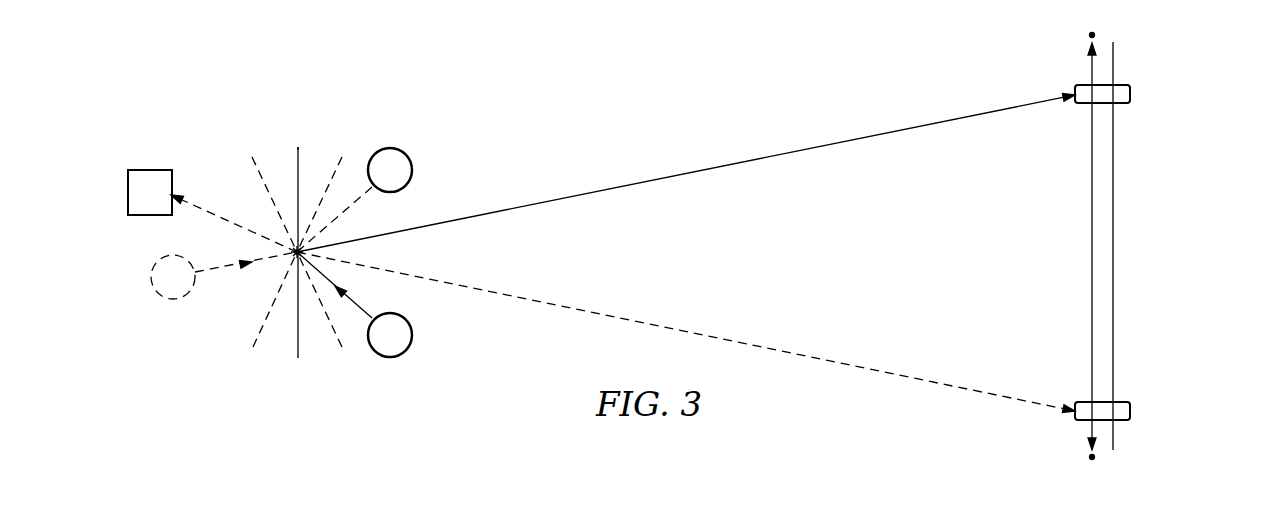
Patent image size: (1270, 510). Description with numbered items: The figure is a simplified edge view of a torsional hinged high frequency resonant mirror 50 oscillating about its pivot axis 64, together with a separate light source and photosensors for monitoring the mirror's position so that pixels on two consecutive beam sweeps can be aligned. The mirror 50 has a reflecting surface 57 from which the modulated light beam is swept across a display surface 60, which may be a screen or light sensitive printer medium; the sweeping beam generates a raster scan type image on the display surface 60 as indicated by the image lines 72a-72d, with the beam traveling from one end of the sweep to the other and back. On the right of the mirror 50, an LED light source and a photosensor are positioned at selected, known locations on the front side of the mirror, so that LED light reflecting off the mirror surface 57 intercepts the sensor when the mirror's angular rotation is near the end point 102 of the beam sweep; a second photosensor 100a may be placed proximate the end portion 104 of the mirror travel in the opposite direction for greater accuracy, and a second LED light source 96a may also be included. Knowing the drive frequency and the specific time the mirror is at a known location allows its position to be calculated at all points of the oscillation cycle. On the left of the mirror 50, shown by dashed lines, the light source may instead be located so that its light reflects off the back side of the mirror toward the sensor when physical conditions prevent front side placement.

The high frequency resonant mirror 50 is at (323, 157).
The reflecting surface 57 is at (298, 150).
The display surface 60 is at (1113, 302).
The pivot axis 64 is at (284, 262).
The image lines 72a-72d is at (1090, 70).
The second LED light source 96a is at (395, 148).
The second photosensor 100a is at (1132, 411).
The end point of beam sweep 102 is at (1100, 33).
The end portion of mirror travel 104 is at (1085, 458).